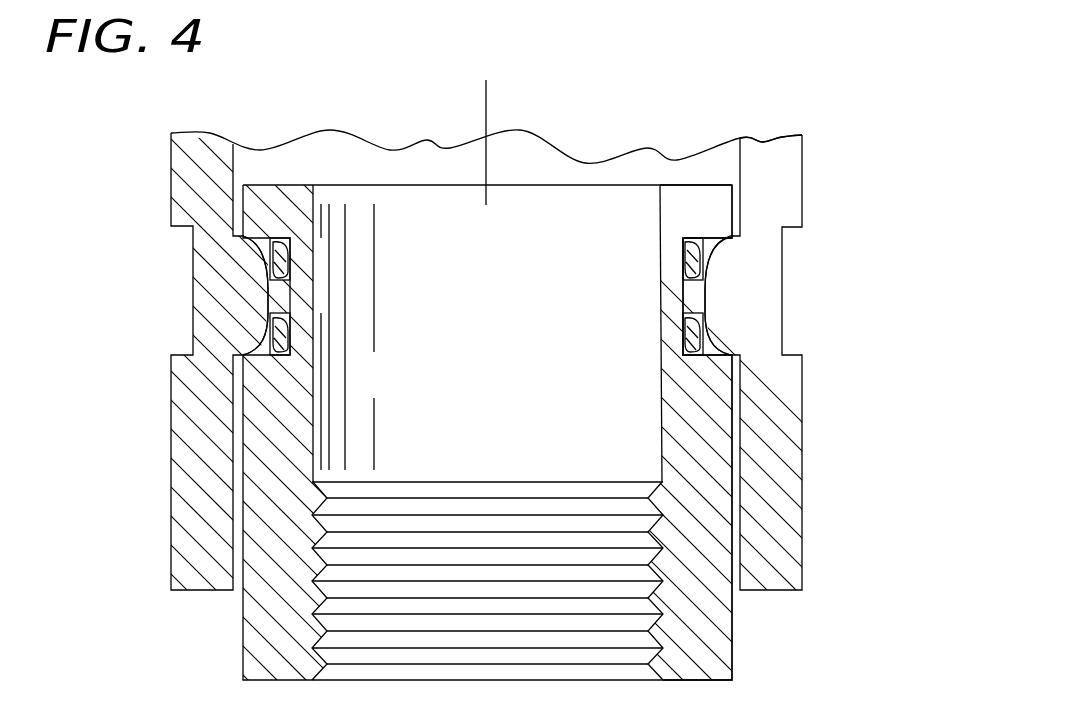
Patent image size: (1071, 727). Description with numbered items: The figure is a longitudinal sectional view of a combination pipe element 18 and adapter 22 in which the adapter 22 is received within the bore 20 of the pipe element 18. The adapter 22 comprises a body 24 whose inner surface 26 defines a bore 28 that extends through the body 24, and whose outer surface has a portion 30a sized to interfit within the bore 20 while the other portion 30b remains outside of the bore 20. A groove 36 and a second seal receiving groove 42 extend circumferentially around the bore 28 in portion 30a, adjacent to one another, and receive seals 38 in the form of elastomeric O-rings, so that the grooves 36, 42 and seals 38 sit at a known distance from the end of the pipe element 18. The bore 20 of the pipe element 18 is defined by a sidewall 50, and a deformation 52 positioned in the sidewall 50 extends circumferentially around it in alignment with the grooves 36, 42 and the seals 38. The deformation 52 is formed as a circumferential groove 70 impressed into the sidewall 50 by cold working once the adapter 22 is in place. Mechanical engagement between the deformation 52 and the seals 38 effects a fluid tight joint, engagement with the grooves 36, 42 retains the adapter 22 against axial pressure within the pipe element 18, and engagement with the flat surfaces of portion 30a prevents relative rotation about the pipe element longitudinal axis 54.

The bore 20 is at (296, 168).
The bore 28 is at (395, 197).
The pipe element longitudinal axis 54 is at (486, 108).
The inner surface 26 is at (588, 195).
The sidewall 50 is at (790, 133).
The pipe element 18 is at (802, 164).
The seals 38 is at (700, 257).
The groove 36 is at (685, 270).
The second seal receiving groove 42 is at (687, 353).
The deformation 52 is at (253, 297).
The circumferential groove 70 is at (180, 337).
The portion of outer surface 30a is at (718, 393).
The adapter 22 is at (636, 580).
The body 24 is at (713, 480).
The portion of outer surface 30b is at (712, 617).